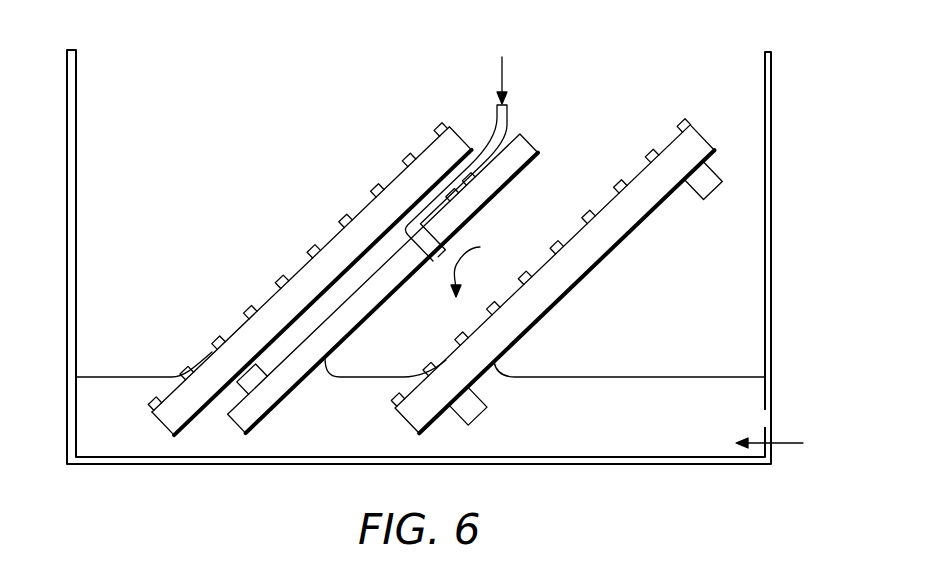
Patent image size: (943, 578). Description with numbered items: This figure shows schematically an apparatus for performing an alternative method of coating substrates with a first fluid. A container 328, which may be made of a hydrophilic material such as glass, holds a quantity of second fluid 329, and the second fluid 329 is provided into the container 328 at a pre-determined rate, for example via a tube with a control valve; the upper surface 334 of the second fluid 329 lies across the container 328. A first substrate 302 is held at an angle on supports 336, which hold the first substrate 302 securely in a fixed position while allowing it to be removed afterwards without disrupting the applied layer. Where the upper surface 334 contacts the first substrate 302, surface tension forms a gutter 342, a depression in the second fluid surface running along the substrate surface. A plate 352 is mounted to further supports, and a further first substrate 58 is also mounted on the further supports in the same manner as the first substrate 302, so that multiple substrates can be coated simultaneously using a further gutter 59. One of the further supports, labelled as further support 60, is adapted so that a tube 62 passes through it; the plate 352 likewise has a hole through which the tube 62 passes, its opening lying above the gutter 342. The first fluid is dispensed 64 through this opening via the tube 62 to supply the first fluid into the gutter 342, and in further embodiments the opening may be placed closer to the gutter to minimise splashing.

The further first substrate 58 is at (405, 187).
The further gutter 59 is at (162, 382).
The further support 60 is at (433, 157).
The tube 62 is at (512, 108).
The dispensing of the first fluid 64 is at (479, 265).
The first substrate 302 is at (556, 304).
The container 328 is at (772, 152).
The second fluid 329 is at (740, 408).
The upper surface of the second fluid 334 is at (108, 377).
The support 336 is at (265, 385).
The gutter 342 is at (399, 396).
The plate 352 is at (538, 142).